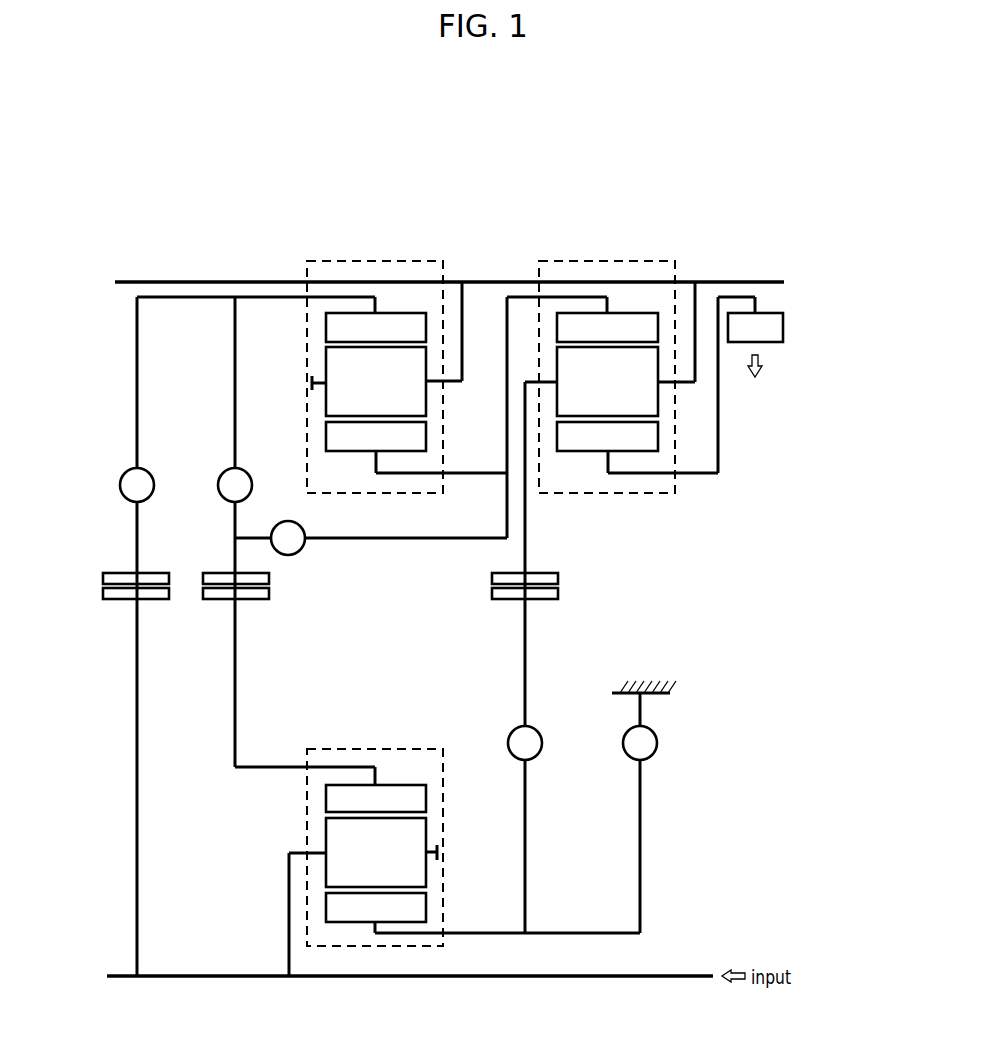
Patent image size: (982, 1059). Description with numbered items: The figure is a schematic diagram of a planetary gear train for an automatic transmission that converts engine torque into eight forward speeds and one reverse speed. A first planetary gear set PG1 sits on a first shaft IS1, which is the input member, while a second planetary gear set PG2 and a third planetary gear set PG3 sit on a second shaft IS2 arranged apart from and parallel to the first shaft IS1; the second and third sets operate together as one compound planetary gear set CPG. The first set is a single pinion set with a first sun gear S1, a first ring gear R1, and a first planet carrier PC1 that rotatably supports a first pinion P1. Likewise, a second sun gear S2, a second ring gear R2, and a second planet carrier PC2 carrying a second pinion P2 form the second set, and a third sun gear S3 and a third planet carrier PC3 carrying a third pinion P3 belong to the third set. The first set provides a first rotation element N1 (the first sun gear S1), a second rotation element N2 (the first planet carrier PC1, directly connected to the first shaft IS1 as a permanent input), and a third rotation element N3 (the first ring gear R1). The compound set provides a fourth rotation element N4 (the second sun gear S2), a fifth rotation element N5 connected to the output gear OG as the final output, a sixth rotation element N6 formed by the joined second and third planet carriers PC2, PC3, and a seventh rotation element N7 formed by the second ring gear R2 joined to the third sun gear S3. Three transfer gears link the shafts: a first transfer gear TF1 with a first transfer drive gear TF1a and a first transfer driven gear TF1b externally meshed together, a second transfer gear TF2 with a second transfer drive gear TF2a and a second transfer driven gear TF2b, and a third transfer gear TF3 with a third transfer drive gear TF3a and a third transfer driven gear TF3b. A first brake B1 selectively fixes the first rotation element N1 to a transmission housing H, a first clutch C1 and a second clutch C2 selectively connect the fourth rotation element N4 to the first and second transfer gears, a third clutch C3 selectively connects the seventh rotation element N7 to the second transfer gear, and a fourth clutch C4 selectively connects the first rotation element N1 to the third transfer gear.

The first shaft IS1 is at (602, 979).
The second shaft IS2 is at (181, 280).
The compound planetary gear set CPG is at (542, 155).
The first planetary gear set PG1 is at (362, 952).
The second planetary gear set PG2 is at (405, 253).
The third planetary gear set PG3 is at (562, 253).
The first pinion P1 is at (376, 852).
The second pinion P2 is at (376, 381).
The third pinion P3 is at (607, 381).
The first rotation element N1 is at (376, 907).
The second rotation element N2 is at (252, 898).
The third rotation element N3 is at (376, 798).
The fourth rotation element N4 is at (376, 327).
The fifth rotation element N5 is at (607, 436).
The sixth rotation element N6 is at (477, 331).
The seventh rotation element N7 is at (376, 436).
The first sun gear S1 is at (376, 907).
The second sun gear S2 is at (376, 327).
The third sun gear S3 is at (607, 327).
The first ring gear R1 is at (376, 798).
The second ring gear R2 is at (376, 436).
The first planet carrier PC1 is at (300, 852).
The second planet carrier PC2 is at (433, 383).
The third planet carrier PC3 is at (682, 384).
The first clutch C1 is at (137, 485).
The second clutch C2 is at (235, 485).
The third clutch C3 is at (371, 538).
The fourth clutch C4 is at (525, 657).
The first brake B1 is at (640, 813).
The transmission housing H is at (660, 680).
The first transfer gear TF1 is at (163, 641).
The first transfer drive gear TF1a is at (169, 578).
The first transfer driven gear TF1b is at (169, 594).
The second transfer gear TF2 is at (263, 641).
The second transfer drive gear TF2a is at (269, 578).
The second transfer driven gear TF2b is at (269, 594).
The third transfer gear TF3 is at (552, 641).
The third transfer drive gear TF3a is at (558, 578).
The third transfer driven gear TF3b is at (558, 594).
The output gear OG is at (755, 361).